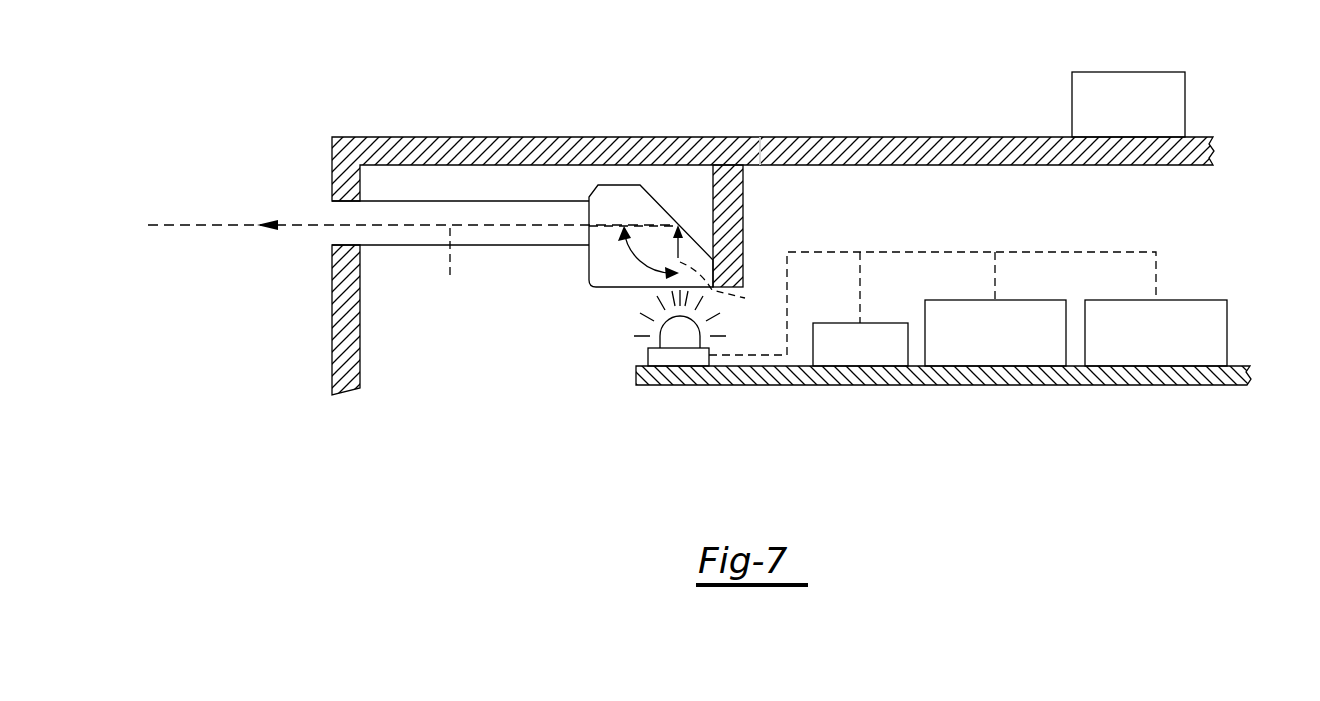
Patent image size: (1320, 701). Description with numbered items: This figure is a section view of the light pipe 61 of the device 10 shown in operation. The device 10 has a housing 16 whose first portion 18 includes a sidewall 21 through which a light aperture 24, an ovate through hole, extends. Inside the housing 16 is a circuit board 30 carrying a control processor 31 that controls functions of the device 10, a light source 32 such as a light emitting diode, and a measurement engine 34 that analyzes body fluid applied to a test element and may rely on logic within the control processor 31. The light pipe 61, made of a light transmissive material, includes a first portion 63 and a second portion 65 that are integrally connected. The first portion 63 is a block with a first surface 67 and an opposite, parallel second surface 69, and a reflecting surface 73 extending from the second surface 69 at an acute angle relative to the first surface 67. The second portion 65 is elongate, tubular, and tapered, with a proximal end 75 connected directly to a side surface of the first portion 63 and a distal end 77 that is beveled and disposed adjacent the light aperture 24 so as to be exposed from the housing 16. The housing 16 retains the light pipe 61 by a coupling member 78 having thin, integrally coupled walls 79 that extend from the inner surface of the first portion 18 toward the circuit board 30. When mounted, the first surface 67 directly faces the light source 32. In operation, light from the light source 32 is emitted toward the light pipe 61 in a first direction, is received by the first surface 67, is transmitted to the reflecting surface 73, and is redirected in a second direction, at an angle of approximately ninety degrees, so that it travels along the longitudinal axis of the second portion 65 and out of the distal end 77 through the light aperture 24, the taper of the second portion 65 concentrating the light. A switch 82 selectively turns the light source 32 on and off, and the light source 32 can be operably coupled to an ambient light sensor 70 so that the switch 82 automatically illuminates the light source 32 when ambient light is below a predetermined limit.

The device 10 is at (789, 84).
The housing 16 is at (863, 134).
The first portion 18 is at (385, 137).
The sidewall 21 is at (332, 343).
The light aperture 24 is at (332, 209).
The circuit board 30 is at (803, 385).
The control processor 31 is at (1037, 300).
The light source 32 is at (648, 357).
The measurement engine 34 is at (1207, 300).
The light pipe 61 is at (516, 192).
The first portion 63 is at (610, 198).
The second portion 65 is at (452, 212).
The first surface 67 is at (612, 288).
The second surface 69 is at (632, 185).
The ambient light sensor 70 is at (1173, 72).
The reflecting surface 73 is at (665, 202).
The proximal end 75 is at (584, 200).
The distal end 77 is at (332, 236).
The coupling member 78 is at (750, 199).
The walls 79 is at (743, 235).
The switch 82 is at (887, 323).